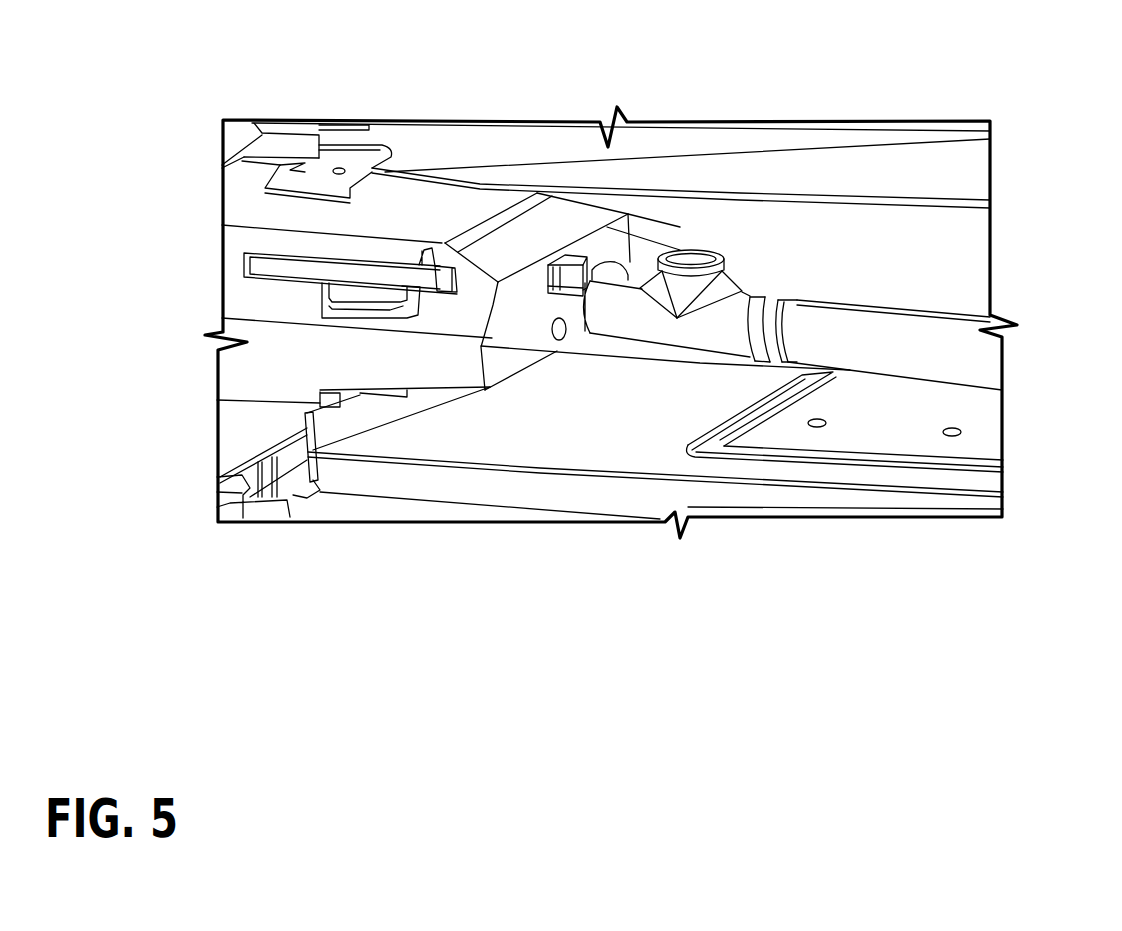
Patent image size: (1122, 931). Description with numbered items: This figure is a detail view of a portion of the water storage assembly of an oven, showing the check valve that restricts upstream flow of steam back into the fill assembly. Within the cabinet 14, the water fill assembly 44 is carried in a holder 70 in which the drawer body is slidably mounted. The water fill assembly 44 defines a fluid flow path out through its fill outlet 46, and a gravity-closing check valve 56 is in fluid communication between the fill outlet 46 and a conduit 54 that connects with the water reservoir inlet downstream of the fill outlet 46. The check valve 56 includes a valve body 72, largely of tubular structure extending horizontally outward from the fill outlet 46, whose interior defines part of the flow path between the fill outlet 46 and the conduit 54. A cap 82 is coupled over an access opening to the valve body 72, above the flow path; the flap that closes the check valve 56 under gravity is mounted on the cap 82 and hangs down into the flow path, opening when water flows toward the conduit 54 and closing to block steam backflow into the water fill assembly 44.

The cabinet 14 is at (807, 480).
The water fill assembly 44 is at (452, 200).
The fill outlet 46 is at (600, 282).
The conduit 54 is at (927, 340).
The gravity-closing check valve 56 is at (752, 298).
The holder 70 is at (385, 228).
The valve body 72 is at (677, 318).
The cap 82 is at (690, 250).